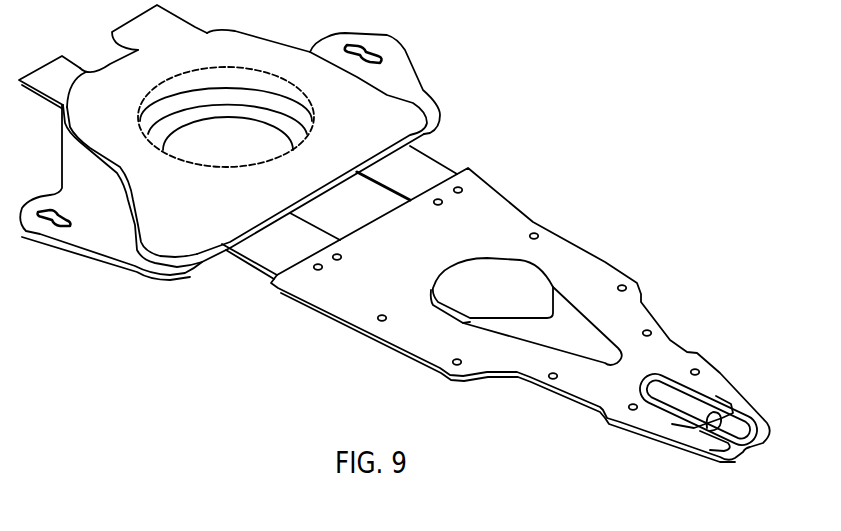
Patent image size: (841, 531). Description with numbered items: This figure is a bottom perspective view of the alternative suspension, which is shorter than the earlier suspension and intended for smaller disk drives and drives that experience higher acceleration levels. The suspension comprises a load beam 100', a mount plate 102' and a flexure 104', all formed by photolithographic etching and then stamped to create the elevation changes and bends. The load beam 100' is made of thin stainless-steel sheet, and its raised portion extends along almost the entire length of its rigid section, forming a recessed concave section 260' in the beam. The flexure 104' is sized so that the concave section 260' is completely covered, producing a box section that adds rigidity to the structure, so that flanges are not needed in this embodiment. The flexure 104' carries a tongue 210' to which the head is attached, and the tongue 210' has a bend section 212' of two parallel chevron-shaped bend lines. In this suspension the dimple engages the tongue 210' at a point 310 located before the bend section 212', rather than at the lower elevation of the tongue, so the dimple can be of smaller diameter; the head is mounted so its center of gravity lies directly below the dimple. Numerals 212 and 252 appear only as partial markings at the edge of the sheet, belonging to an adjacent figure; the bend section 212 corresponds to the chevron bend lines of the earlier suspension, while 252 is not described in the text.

The load beam 100' is at (111, 192).
The mount plate 102' is at (229, 136).
The flexure 104' is at (496, 304).
The concave section 260' is at (526, 288).
The tongue 210' is at (698, 360).
The bend section 212' is at (686, 437).
The point 310 is at (708, 448).
The bend section 212 is at (668, 6).
The locking member 252 is at (714, 7).